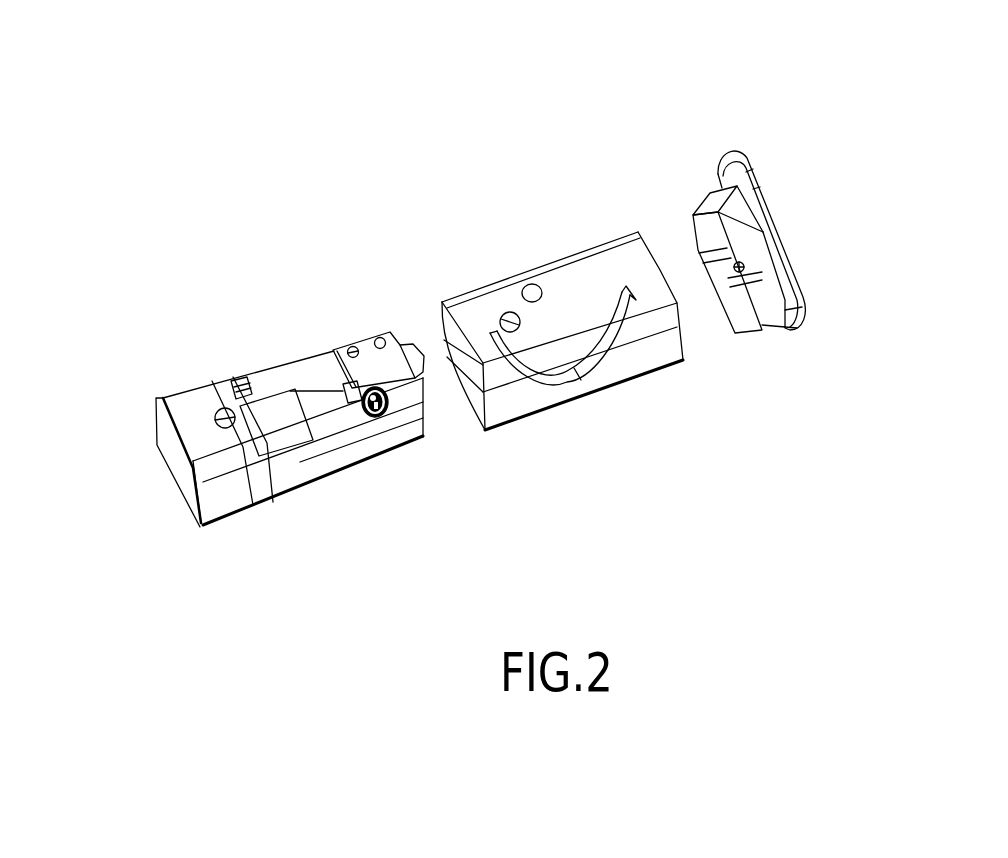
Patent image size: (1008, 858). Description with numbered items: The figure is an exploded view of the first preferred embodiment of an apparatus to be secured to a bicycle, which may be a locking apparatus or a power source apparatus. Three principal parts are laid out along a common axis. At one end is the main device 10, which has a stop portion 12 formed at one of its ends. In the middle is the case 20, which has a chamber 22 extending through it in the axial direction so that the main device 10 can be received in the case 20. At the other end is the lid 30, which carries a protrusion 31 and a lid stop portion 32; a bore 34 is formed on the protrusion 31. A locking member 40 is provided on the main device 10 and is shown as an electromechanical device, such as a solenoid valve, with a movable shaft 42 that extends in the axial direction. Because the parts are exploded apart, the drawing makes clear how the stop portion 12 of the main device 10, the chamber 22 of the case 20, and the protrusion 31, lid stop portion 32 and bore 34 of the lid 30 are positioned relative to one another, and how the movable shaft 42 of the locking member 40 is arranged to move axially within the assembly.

The main device 10 is at (266, 324).
The stop portion 12 is at (156, 401).
The case 20 is at (570, 270).
The chamber 22 is at (445, 327).
The lid 30 is at (751, 127).
The protrusion 31 is at (745, 316).
The lid stop portion 32 is at (718, 166).
The bore 34 is at (740, 261).
The locking member 40 is at (393, 439).
The movable shaft 42 is at (372, 404).